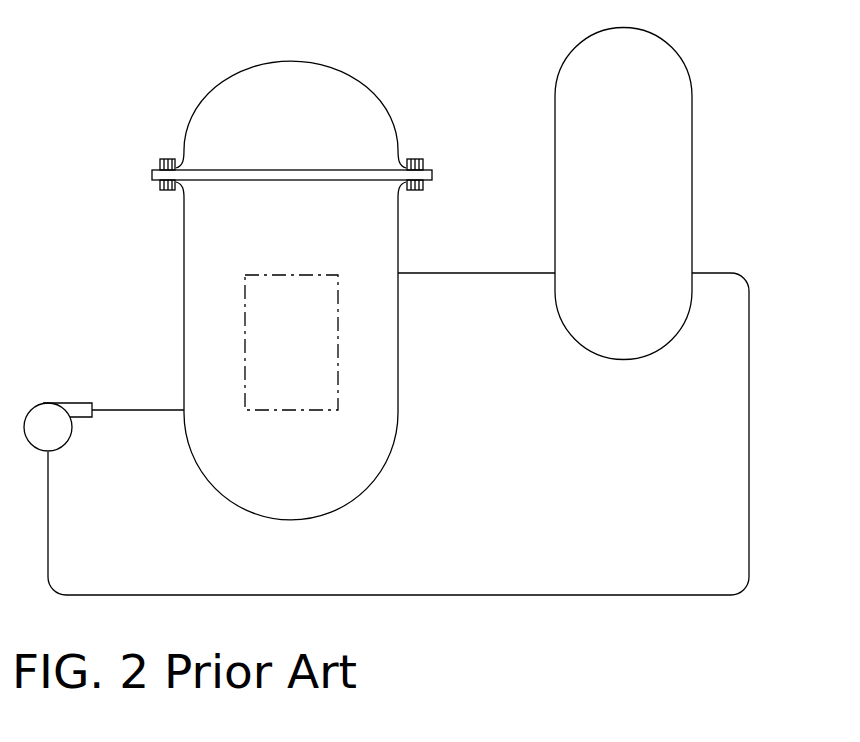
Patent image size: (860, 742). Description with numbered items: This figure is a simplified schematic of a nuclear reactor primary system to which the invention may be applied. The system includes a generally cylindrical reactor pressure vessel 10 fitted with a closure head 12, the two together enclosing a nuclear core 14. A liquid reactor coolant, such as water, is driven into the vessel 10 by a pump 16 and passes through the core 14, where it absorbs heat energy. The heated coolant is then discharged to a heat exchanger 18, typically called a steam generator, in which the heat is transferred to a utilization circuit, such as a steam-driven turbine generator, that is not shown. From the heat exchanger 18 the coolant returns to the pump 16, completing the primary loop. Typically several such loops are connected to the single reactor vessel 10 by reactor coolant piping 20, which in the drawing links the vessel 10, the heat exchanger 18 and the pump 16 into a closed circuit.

The reactor pressure vessel 10 is at (307, 356).
The closure head 12 is at (193, 120).
The nuclear core 14 is at (243, 330).
The pump 16 is at (45, 402).
The heat exchanger 18 is at (693, 132).
The reactor coolant piping 20 is at (749, 525).